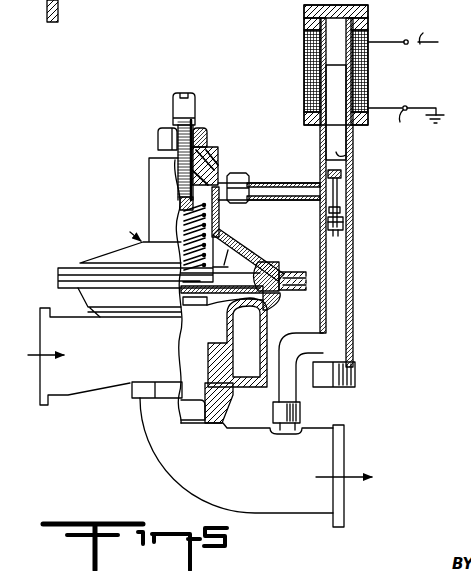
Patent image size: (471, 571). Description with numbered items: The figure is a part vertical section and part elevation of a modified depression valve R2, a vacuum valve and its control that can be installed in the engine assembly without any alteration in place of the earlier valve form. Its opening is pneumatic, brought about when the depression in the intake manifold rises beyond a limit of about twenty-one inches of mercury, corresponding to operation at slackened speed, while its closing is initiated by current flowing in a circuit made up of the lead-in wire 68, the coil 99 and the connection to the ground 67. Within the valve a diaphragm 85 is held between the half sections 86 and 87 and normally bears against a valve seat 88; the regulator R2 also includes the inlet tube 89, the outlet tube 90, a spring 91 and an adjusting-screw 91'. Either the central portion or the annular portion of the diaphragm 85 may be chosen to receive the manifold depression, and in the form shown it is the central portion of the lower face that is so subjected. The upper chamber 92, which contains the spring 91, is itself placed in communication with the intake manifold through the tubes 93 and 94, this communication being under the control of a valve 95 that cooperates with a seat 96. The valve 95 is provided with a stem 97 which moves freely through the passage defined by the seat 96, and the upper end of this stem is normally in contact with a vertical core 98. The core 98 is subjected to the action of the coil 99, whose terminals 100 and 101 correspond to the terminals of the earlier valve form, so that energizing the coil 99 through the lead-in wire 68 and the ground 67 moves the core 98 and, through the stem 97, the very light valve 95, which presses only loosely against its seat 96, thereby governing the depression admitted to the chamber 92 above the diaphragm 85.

The ground connection 67 is at (443, 120).
The lead-in wire 68 is at (431, 33).
The diaphragm 85 is at (252, 258).
The half section 86 is at (282, 292).
The half section 87 is at (282, 272).
The valve seat 88 is at (228, 312).
The inlet tube 89 is at (70, 396).
The outlet tube 90 is at (297, 513).
The spring 91 is at (213, 228).
The adjusting-screw 91' is at (192, 146).
The upper chamber 92 is at (225, 256).
The tube 93 is at (272, 186).
The tube 94 is at (353, 265).
The valve 95 is at (344, 224).
The seat 96 is at (341, 210).
The stem 97 is at (347, 178).
The vertical core 98 is at (350, 157).
The coil 99 is at (368, 72).
The terminal 100 is at (388, 33).
The terminal 101 is at (402, 118).
The depression valve R2 is at (127, 229).